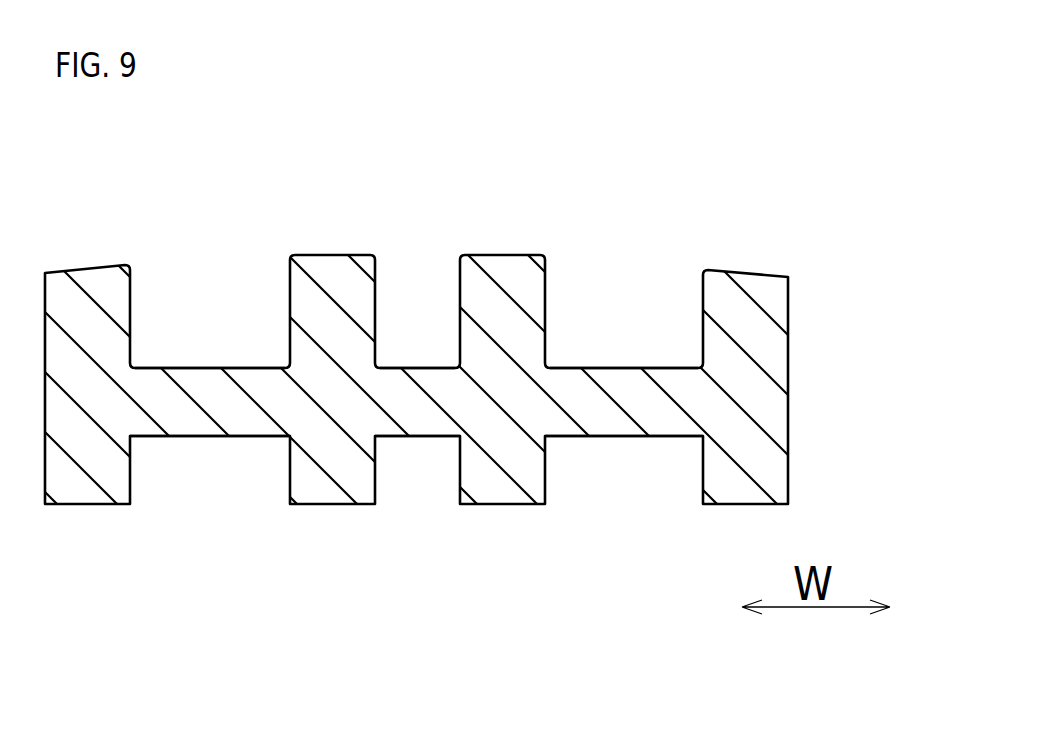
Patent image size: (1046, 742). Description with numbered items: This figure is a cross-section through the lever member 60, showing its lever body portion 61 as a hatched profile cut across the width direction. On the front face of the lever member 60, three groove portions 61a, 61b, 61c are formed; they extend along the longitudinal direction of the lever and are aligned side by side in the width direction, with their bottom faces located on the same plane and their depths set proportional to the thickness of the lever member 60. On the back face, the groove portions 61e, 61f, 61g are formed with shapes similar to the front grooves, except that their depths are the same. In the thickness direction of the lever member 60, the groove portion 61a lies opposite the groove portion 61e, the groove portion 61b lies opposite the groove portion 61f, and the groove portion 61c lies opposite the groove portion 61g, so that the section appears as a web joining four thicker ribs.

The lever member 60 is at (788, 270).
The lever body portion 61 is at (777, 415).
The groove portion 61a is at (207, 368).
The groove portion 61b is at (427, 368).
The groove portion 61c is at (640, 368).
The groove portion 61e is at (200, 437).
The groove portion 61f is at (427, 437).
The groove portion 61g is at (625, 437).